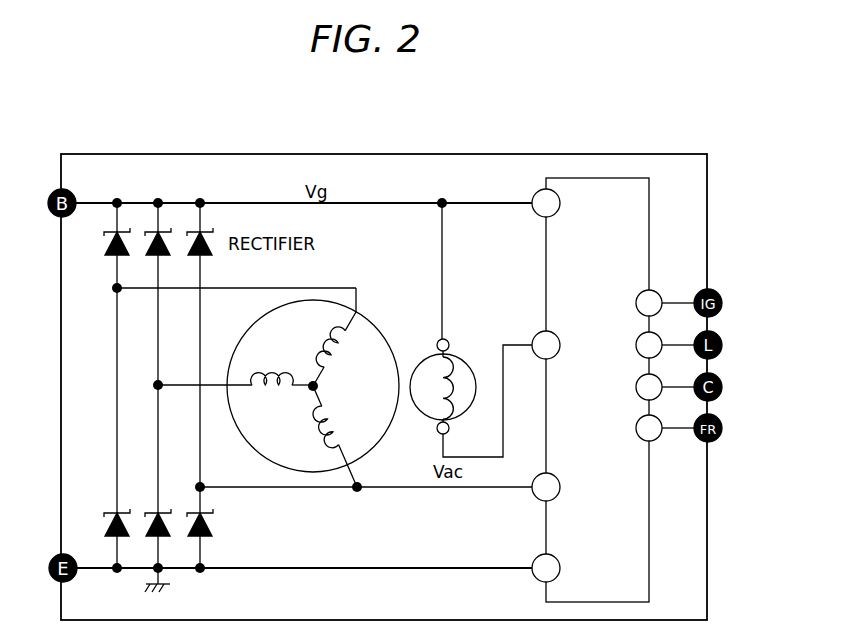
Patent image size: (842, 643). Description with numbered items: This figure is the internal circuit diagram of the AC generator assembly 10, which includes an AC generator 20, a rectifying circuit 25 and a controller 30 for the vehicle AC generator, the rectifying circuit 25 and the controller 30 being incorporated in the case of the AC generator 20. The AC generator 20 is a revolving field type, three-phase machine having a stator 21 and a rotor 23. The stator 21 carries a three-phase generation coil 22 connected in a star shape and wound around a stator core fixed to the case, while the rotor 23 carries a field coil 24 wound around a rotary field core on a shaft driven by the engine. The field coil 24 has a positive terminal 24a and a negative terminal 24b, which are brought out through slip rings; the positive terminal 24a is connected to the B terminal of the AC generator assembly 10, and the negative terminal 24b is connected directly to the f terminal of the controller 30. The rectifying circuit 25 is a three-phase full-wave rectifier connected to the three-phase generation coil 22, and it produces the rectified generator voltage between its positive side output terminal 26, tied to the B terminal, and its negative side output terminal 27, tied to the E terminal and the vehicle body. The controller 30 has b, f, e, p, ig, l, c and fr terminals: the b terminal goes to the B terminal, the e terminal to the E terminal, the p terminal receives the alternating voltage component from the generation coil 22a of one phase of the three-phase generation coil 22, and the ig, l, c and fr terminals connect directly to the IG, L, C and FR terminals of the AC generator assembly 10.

The AC generator assembly 10 is at (372, 155).
The AC generator 20 is at (366, 281).
The stator 21 is at (304, 424).
The three-phase generation coil 22 is at (270, 380).
The generation coil 22a is at (328, 418).
The rotor 23 is at (456, 359).
The field coil 24 is at (442, 377).
The positive terminal 24a is at (438, 340).
The negative terminal 24b is at (449, 430).
The rectifying circuit 25 is at (126, 352).
The positive side output terminal 26 is at (158, 200).
The negative side output terminal 27 is at (162, 571).
The controller 30 is at (598, 179).